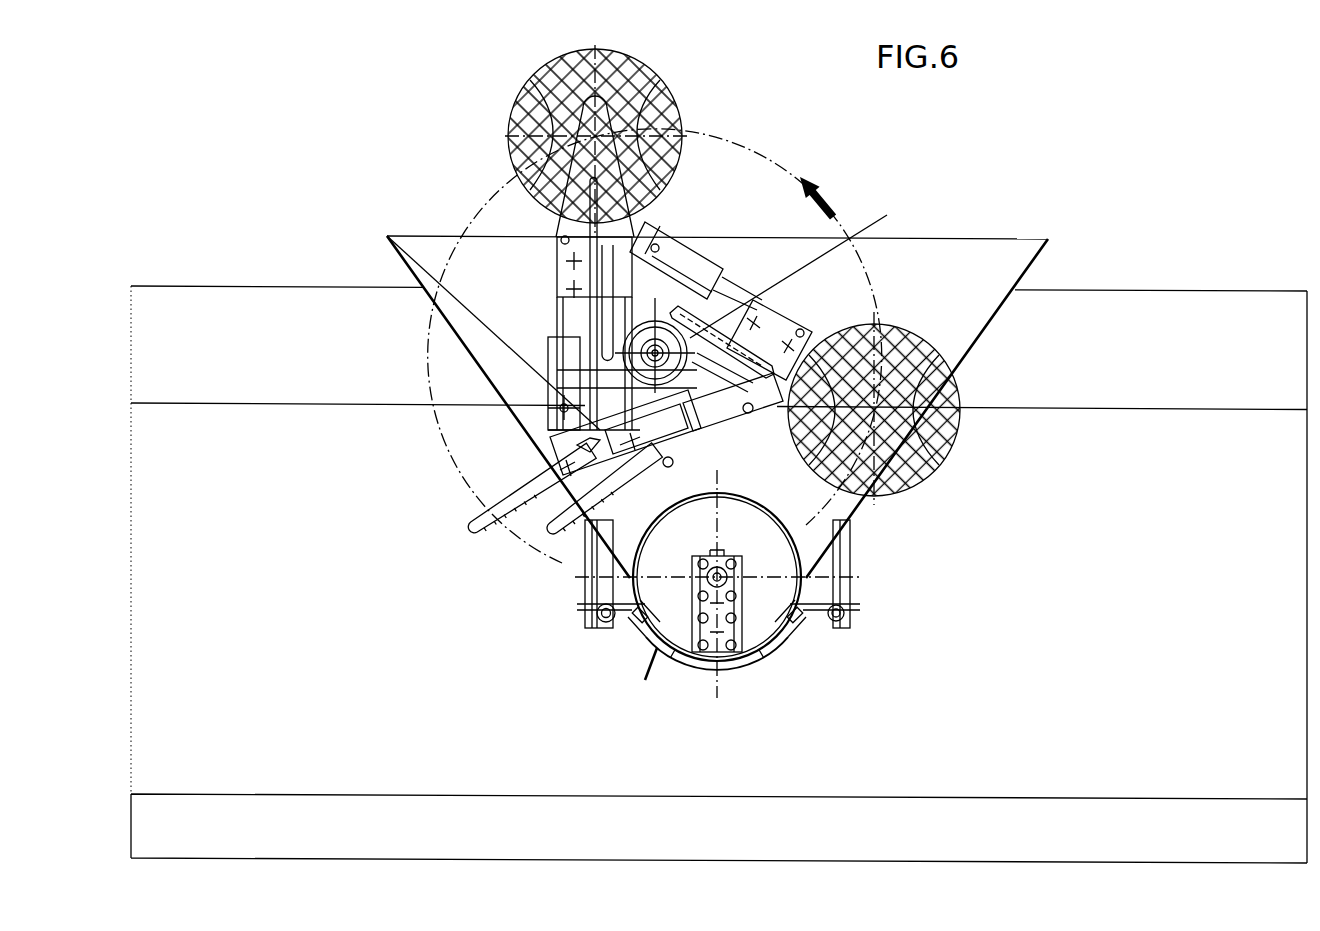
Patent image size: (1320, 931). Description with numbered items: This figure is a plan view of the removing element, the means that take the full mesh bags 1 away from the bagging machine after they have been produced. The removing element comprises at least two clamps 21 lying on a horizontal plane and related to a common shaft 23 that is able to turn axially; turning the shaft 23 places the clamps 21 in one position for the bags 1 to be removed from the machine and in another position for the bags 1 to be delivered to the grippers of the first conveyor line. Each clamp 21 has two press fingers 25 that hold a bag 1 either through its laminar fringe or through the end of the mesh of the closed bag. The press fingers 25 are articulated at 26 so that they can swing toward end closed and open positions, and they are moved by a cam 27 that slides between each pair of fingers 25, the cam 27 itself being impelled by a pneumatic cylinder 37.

The full mesh bag 1 is at (905, 470).
The clamp 21 is at (602, 380).
The common shaft 23 is at (800, 270).
The press fingers 25 is at (570, 515).
The articulation 26 is at (555, 412).
The cam 27 is at (387, 236).
The pneumatic cylinder 37 is at (657, 320).